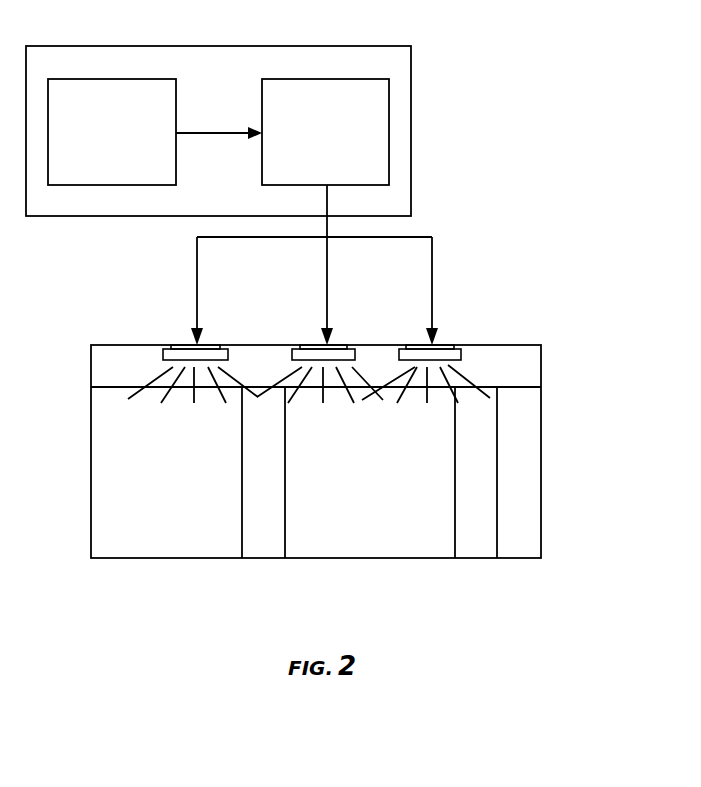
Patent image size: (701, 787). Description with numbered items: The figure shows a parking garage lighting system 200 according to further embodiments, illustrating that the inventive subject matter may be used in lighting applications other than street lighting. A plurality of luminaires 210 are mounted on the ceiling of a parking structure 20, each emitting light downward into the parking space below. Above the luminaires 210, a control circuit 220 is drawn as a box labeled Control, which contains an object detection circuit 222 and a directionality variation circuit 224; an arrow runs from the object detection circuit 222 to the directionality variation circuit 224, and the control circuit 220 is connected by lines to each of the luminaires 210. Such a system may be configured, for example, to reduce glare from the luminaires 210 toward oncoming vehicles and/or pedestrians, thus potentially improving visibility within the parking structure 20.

The lighting system 200 is at (497, 89).
The control circuit 220 is at (218, 46).
The object detection circuit 222 is at (112, 79).
The directionality variation circuit 224 is at (326, 79).
The luminaires 210 is at (218, 345).
The parking structure 20 is at (515, 558).